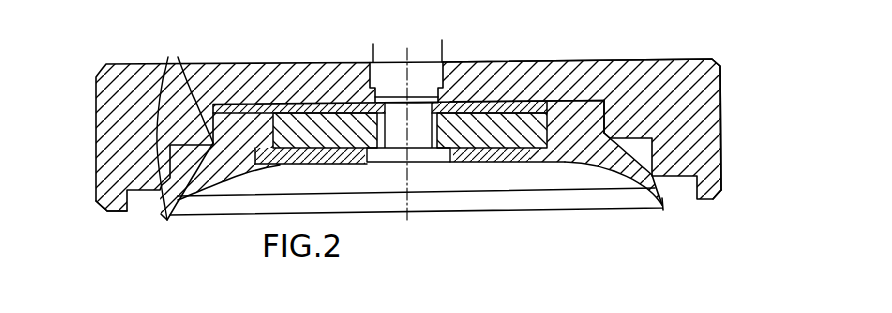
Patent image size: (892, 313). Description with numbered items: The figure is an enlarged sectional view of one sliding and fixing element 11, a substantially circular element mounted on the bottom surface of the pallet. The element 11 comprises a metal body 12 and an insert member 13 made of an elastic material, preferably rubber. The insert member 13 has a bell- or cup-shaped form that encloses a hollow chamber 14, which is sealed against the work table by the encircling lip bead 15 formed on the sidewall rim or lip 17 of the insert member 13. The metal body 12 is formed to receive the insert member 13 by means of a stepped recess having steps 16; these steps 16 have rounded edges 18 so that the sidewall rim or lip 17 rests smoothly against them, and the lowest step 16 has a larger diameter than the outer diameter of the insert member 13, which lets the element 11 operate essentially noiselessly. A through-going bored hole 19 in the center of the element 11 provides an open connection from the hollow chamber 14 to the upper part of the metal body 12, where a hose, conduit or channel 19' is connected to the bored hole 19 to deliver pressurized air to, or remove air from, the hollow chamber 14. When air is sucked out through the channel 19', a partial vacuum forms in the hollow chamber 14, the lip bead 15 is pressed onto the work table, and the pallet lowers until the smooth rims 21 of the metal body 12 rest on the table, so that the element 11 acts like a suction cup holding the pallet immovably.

The sliding and fixing element 11 is at (755, 118).
The metal body 12 is at (667, 62).
The insert member 13 is at (583, 67).
The hollow chamber 14 is at (478, 185).
The lip bead 15 is at (662, 205).
The steps 16 is at (222, 104).
The sidewall rim or lip 17 is at (610, 166).
The rounded edges 18 is at (185, 126).
The bored hole 19 is at (408, 116).
The channel 19' is at (407, 36).
The smooth rims 21 is at (106, 213).